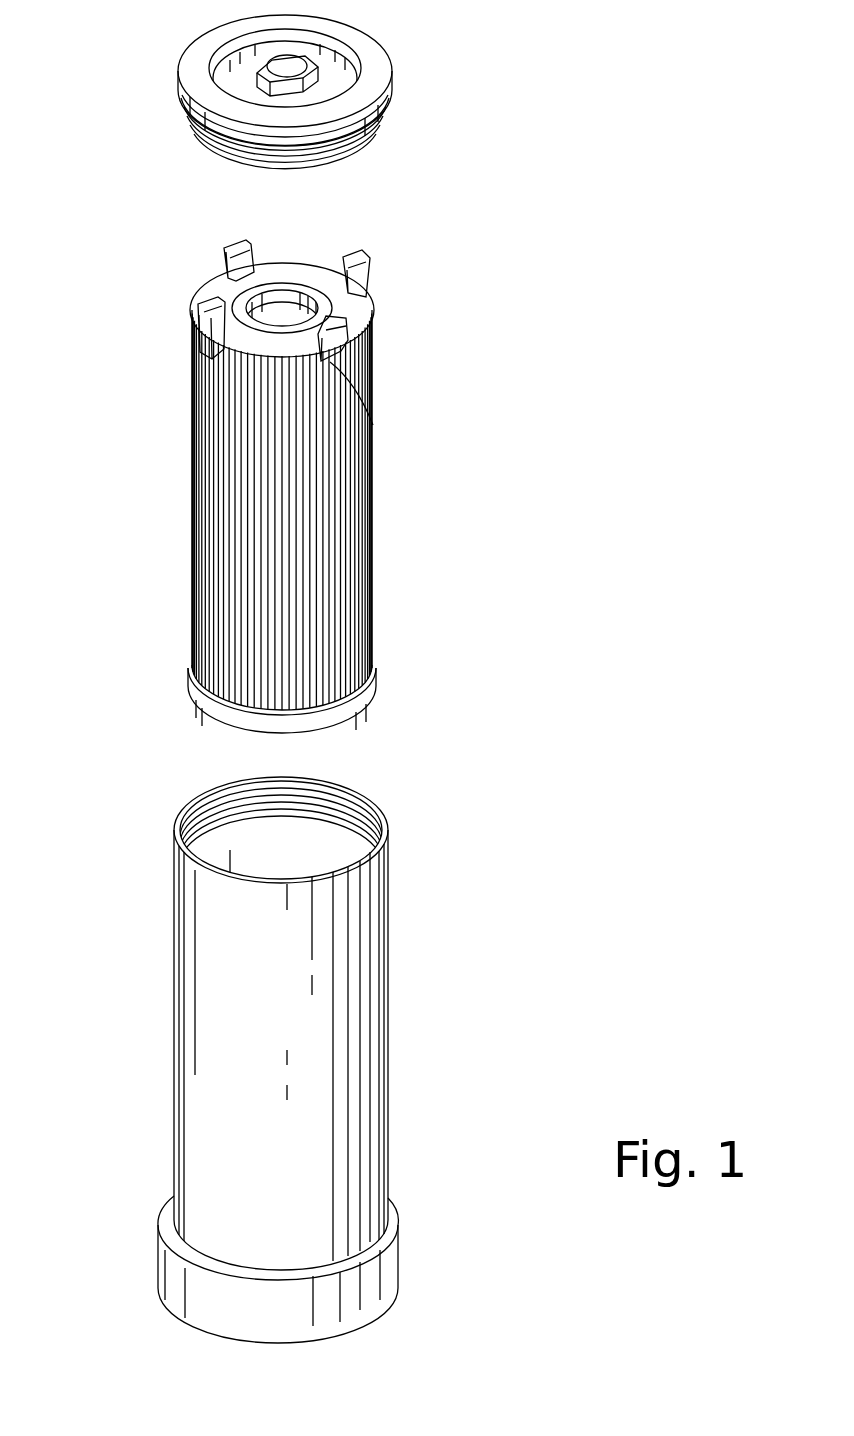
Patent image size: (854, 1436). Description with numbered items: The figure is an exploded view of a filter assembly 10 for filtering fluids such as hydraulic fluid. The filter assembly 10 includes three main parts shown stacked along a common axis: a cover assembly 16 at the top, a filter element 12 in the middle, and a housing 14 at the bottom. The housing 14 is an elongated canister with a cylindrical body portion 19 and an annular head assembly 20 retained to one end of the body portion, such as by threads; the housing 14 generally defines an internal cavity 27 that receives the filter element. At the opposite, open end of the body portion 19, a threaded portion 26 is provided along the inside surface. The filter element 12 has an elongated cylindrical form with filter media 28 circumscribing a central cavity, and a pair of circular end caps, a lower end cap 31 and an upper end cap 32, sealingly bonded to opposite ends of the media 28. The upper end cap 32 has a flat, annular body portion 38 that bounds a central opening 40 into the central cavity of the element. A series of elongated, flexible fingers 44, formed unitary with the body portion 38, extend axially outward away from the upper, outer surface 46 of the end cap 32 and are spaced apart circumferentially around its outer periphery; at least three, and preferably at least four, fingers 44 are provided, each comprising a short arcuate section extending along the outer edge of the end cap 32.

The filter assembly 10 is at (636, 452).
The filter element 12 is at (390, 568).
The housing 14 is at (412, 1002).
The cover assembly 16 is at (432, 90).
The cylindrical body portion 19 is at (173, 1030).
The annular head assembly 20 is at (400, 1310).
The threaded portion 26 is at (178, 814).
The internal cavity 27 is at (349, 845).
The filter media 28 is at (223, 543).
The lower end cap 31 is at (373, 703).
The upper end cap 32 is at (206, 283).
The annular body portion 38 is at (373, 428).
The central opening 40 is at (372, 316).
The flexible fingers 44 is at (230, 231).
The upper outer surface 46 is at (234, 350).